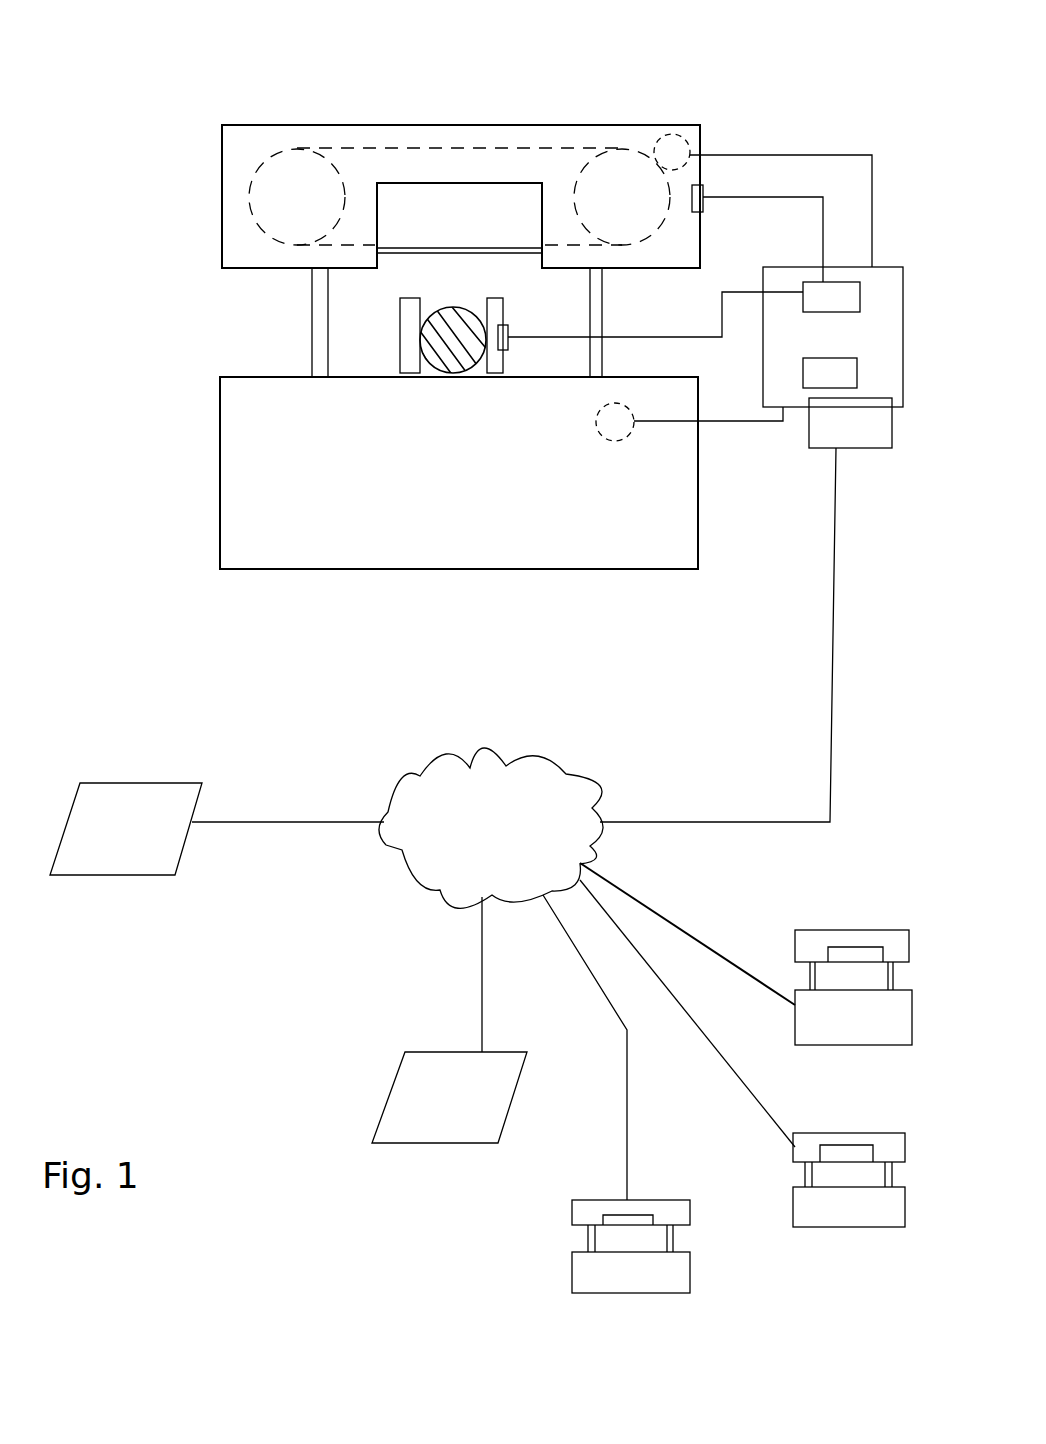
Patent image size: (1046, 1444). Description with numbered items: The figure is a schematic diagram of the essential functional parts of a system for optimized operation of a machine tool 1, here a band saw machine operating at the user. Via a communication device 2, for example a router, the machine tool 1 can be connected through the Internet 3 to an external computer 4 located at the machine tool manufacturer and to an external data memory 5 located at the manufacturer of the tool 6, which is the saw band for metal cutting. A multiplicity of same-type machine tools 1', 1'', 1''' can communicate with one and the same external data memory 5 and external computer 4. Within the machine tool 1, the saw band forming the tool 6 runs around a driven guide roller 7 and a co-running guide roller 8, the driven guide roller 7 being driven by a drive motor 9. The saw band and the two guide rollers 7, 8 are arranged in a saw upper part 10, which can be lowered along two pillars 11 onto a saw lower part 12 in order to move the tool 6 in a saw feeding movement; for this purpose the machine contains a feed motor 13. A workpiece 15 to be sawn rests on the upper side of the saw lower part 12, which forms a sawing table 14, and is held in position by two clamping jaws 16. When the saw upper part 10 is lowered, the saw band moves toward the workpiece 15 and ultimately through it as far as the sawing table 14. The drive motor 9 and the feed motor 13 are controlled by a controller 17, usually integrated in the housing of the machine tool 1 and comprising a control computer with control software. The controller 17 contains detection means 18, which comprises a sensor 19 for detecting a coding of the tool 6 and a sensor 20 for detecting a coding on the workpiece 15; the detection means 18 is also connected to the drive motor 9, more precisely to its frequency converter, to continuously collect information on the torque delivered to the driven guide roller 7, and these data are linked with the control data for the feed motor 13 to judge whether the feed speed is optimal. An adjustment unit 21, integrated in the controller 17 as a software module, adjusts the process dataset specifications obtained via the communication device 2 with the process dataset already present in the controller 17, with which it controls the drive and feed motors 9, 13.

The machine tool 1 is at (445, 434).
The same-type machine tool 1' is at (865, 947).
The same-type machine tool 1'' is at (879, 1206).
The same-type machine tool 1''' is at (576, 1246).
The communication device 2 is at (883, 432).
The Internet 3 is at (587, 974).
The external computer 4 is at (449, 1097).
The external data memory 5 is at (217, 829).
The tool 6 is at (407, 249).
The driven guide roller 7 is at (604, 168).
The co-running guide roller 8 is at (278, 177).
The drive motor 9 is at (682, 135).
The saw upper part 10 is at (340, 132).
The pillars 11 is at (315, 307).
The saw lower part 12 is at (228, 412).
The feed motor 13 is at (620, 442).
The sawing table 14 is at (427, 377).
The workpiece 15 is at (458, 318).
The clamping jaws 16 is at (495, 377).
The controller 17 is at (890, 302).
The detection means 18 is at (843, 290).
The sensor 19 is at (703, 192).
The sensor 20 is at (510, 345).
The adjustment unit 21 is at (857, 372).